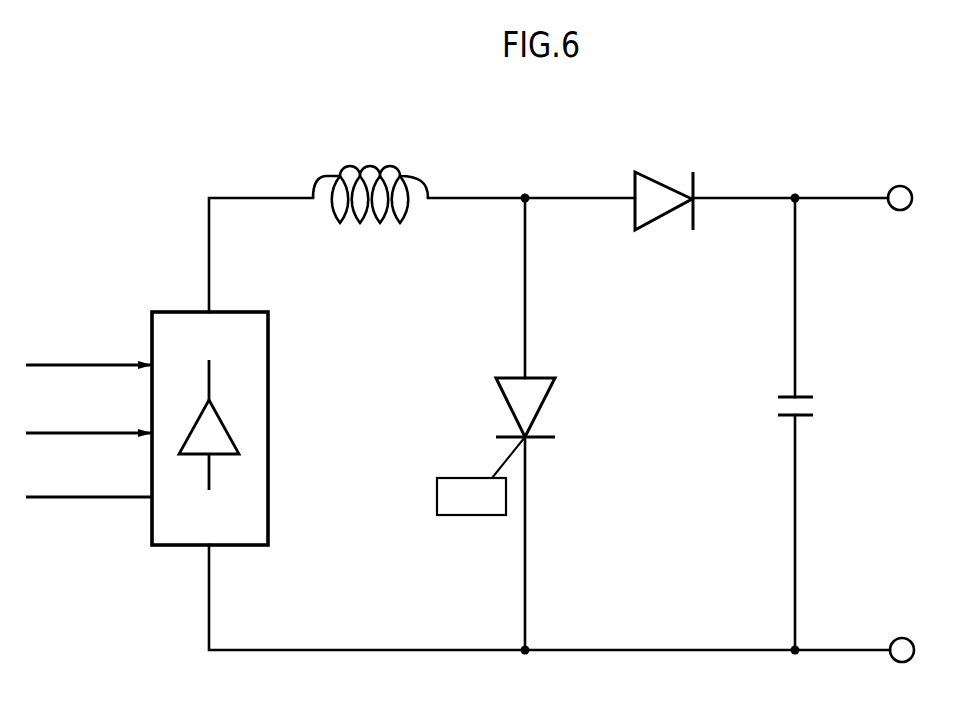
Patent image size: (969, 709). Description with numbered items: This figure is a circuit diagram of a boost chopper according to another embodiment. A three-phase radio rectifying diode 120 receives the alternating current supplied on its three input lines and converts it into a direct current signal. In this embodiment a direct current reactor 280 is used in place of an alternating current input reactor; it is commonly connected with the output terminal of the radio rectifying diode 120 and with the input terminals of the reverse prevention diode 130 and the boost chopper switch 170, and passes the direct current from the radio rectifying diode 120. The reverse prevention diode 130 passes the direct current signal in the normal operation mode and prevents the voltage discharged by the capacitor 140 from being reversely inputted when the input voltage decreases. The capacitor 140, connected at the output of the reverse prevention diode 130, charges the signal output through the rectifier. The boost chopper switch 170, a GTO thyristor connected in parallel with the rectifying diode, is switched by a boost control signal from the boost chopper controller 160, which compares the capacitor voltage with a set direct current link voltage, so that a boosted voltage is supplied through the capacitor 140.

The three-phase radio rectifying diode 120 is at (270, 390).
The direct current reactor 280 is at (402, 177).
The reverse prevention diode 130 is at (663, 178).
The boost chopper switch 170 is at (512, 422).
The boost chopper controller 160 is at (437, 500).
The capacitor 140 is at (805, 390).